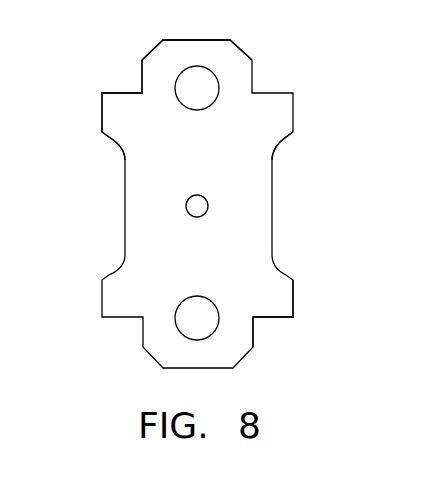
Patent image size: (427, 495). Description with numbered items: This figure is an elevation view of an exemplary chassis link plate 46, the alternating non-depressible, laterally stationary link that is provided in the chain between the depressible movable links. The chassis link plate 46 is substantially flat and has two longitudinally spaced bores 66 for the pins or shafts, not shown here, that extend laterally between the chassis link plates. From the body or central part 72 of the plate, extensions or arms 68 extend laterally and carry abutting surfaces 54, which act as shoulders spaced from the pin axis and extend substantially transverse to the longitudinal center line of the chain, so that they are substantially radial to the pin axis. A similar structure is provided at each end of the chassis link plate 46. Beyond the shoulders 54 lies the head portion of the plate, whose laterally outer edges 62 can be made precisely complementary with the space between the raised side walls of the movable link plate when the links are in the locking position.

The chassis link plate 46 is at (210, 268).
The abutting surfaces 54 is at (117, 92).
The laterally outer edges 62 is at (142, 72).
The longitudinally spaced bores 66 is at (218, 108).
The extensions or arms 68 is at (130, 122).
The body or central part 72 is at (243, 203).